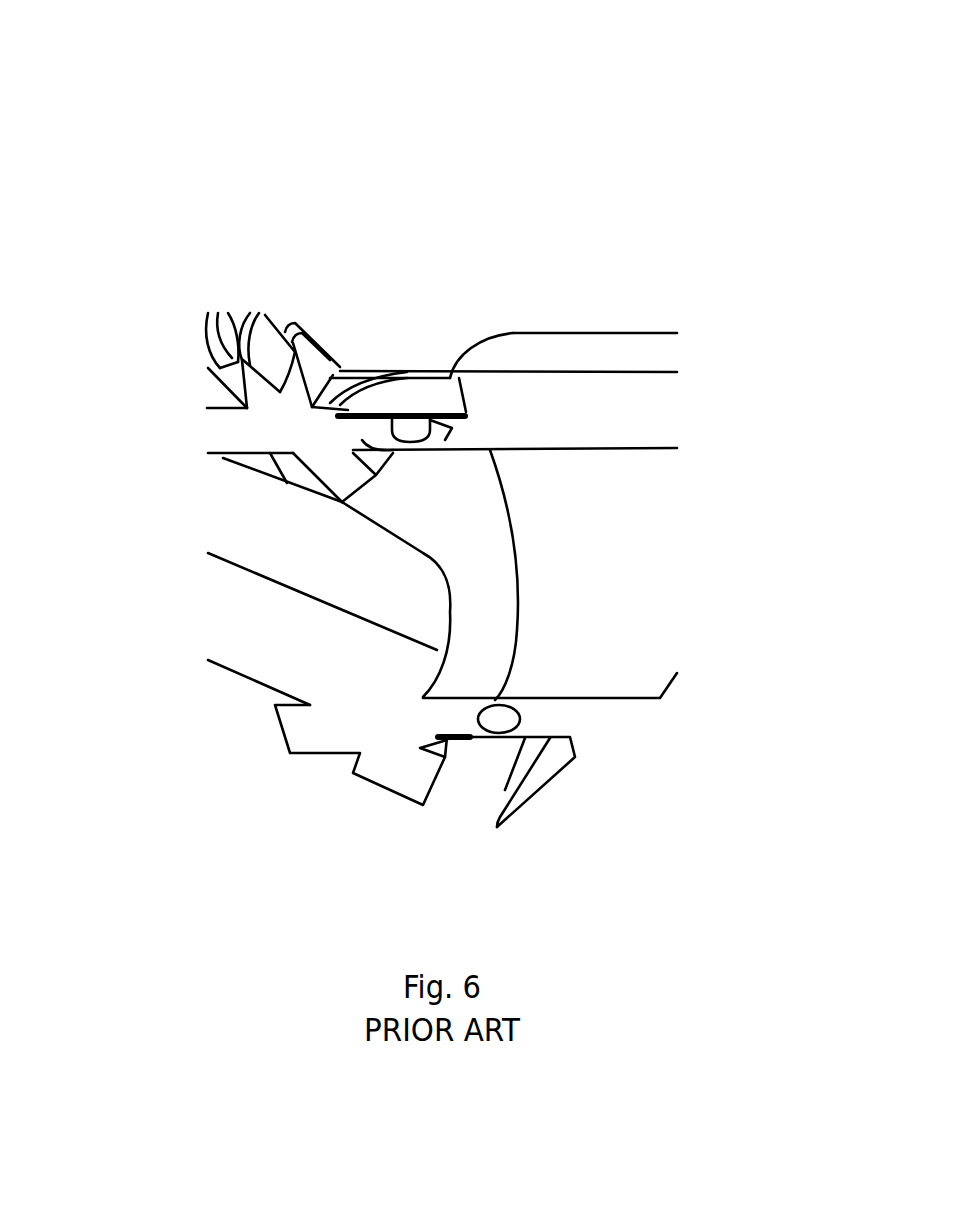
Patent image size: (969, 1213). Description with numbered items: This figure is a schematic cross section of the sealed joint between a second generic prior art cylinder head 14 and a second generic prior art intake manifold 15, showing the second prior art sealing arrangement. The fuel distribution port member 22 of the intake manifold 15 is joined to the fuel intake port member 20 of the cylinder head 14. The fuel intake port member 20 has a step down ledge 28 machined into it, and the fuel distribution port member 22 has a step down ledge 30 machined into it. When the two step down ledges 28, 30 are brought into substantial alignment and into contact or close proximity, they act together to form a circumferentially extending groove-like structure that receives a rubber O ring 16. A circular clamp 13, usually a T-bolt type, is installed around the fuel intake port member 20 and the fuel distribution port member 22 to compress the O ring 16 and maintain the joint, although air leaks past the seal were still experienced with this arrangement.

The circular clamp 13 is at (405, 400).
The cylinder head 14 is at (652, 528).
The intake manifold 15 is at (208, 420).
The rubber O ring 16 is at (413, 428).
The fuel intake port member 20 is at (454, 430).
The fuel distribution port member 22 is at (362, 440).
The step down ledge 28 is at (393, 437).
The step down ledge 30 is at (452, 428).